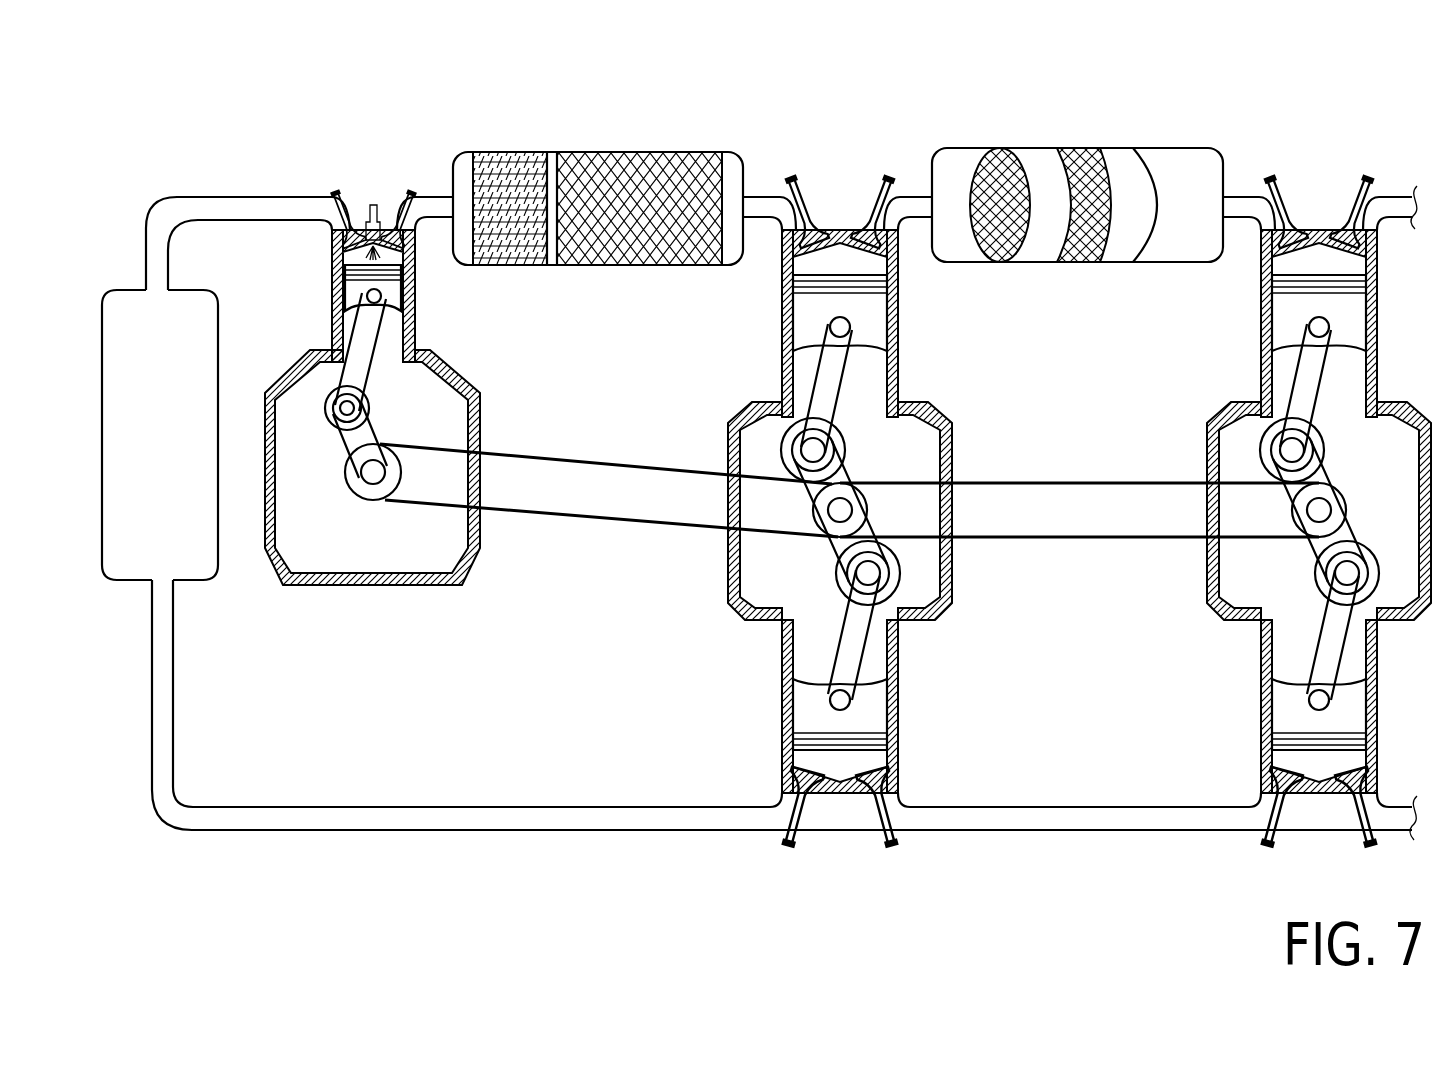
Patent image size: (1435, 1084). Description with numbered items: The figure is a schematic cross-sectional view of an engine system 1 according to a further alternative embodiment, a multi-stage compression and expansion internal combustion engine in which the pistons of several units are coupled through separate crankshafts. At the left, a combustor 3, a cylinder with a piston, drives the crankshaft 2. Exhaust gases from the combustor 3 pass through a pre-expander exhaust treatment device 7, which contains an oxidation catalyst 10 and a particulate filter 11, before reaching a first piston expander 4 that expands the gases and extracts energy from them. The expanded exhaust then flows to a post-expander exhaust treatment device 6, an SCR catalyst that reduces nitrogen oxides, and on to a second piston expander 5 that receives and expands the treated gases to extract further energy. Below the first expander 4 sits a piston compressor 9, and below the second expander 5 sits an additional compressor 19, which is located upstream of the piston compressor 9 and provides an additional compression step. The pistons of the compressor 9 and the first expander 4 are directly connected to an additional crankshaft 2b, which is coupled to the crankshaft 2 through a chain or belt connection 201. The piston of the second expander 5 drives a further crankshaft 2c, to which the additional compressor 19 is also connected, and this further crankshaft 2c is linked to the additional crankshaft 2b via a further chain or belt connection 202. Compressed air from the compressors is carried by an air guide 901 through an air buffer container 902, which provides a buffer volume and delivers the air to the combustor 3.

The engine system 1 is at (248, 121).
The crankshaft 2 is at (368, 480).
The additional crankshaft 2b is at (827, 515).
The further crankshaft 2c is at (1282, 551).
The combustor 3 is at (331, 266).
The first piston expander 4 is at (782, 315).
The second piston expander 5 is at (1300, 312).
The post-expander exhaust treatment device 6 is at (1167, 148).
The pre-expander exhaust treatment device 7 is at (707, 152).
The piston compressor 9 is at (781, 697).
The oxidation catalyst 10 is at (510, 170).
The particulate filter 11 is at (630, 177).
The additional compressor 19 is at (1276, 735).
The chain or belt connection 201 is at (600, 462).
The further chain or belt connection 202 is at (1065, 484).
The air guide 901 is at (459, 806).
The air buffer container 902 is at (128, 290).